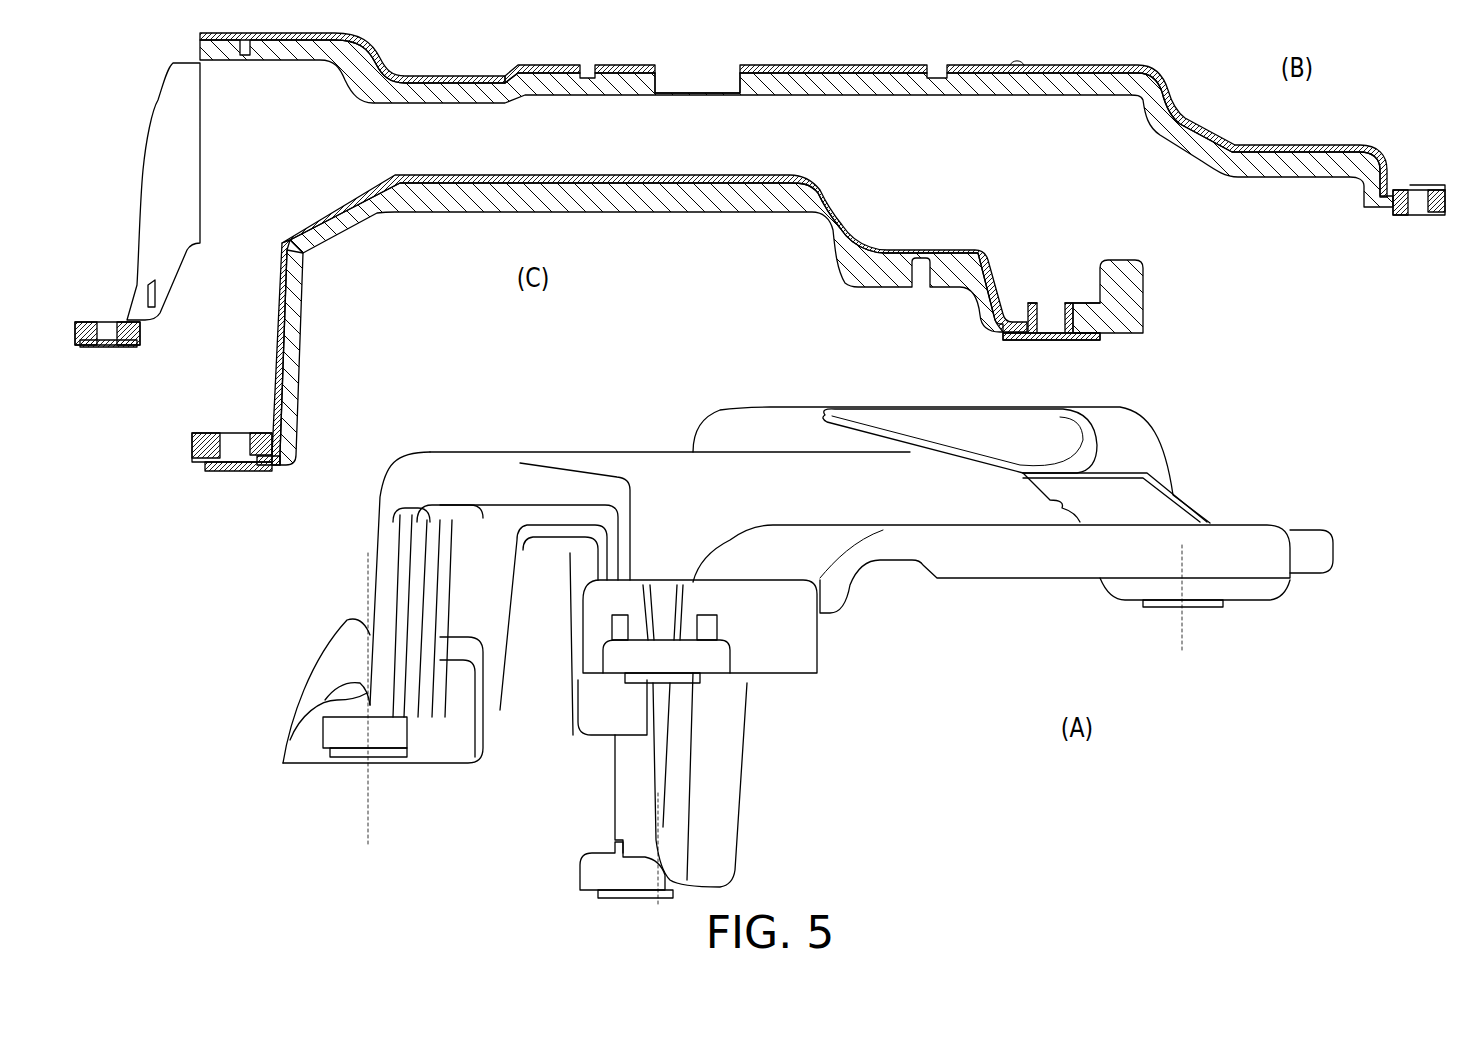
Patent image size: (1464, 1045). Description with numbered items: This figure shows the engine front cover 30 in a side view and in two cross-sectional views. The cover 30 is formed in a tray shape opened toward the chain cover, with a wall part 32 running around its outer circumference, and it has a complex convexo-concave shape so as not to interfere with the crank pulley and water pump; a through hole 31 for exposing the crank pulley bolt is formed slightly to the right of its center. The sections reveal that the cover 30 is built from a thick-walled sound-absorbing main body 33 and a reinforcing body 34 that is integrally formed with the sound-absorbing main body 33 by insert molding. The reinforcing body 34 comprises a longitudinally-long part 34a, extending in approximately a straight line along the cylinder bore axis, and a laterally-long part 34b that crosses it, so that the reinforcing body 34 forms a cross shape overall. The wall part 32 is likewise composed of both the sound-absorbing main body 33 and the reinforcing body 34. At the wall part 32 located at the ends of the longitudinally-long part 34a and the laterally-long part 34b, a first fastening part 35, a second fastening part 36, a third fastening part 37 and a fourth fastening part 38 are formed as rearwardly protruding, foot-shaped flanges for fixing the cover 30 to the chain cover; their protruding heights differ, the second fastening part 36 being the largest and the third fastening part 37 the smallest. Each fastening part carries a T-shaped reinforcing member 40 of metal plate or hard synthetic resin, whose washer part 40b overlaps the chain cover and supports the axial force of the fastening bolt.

The cover 30 is at (1194, 497).
The through hole 31 is at (745, 95).
The wall part 32 is at (124, 158).
The sound-absorbing main body 33 is at (912, 80).
The reinforcing body 34 is at (600, 174).
The longitudinally-long part 34a is at (1020, 66).
The laterally-long part 34b is at (300, 360).
The first fastening part 35 is at (1416, 176).
The second fastening part 36 is at (114, 301).
The third fastening part 37 is at (1068, 292).
The fourth fastening part 38 is at (246, 421).
The reinforcing member 40 is at (110, 356).
The washer part 40b is at (393, 760).